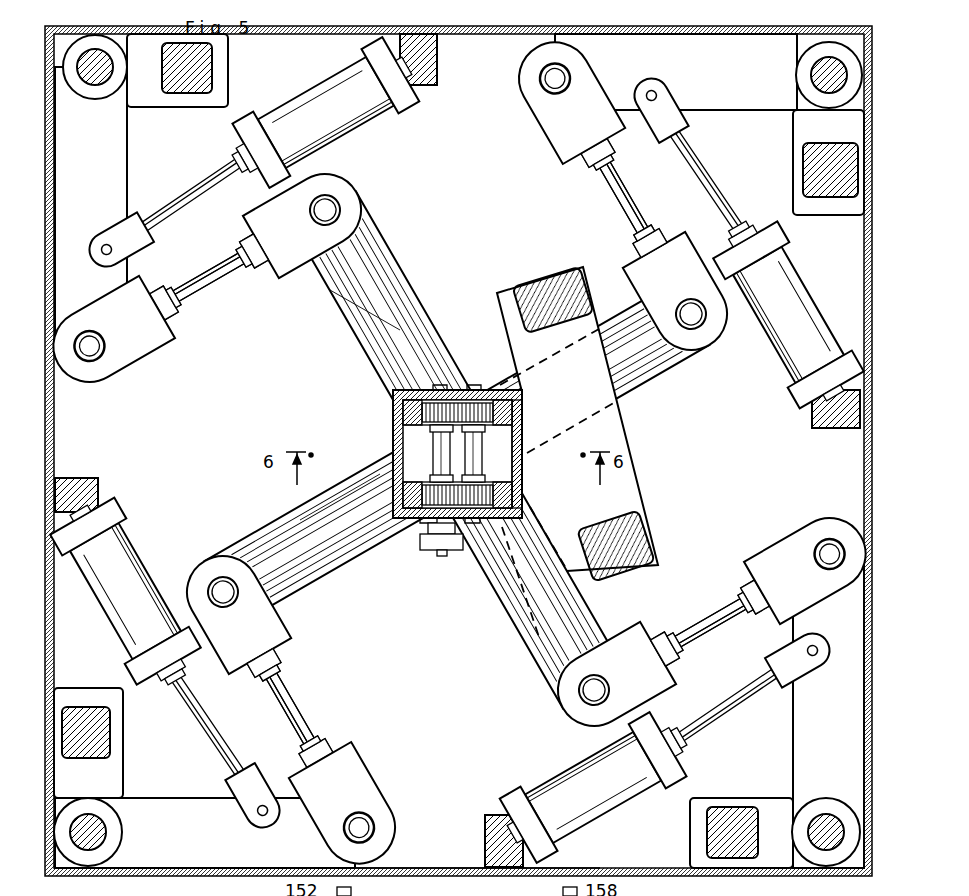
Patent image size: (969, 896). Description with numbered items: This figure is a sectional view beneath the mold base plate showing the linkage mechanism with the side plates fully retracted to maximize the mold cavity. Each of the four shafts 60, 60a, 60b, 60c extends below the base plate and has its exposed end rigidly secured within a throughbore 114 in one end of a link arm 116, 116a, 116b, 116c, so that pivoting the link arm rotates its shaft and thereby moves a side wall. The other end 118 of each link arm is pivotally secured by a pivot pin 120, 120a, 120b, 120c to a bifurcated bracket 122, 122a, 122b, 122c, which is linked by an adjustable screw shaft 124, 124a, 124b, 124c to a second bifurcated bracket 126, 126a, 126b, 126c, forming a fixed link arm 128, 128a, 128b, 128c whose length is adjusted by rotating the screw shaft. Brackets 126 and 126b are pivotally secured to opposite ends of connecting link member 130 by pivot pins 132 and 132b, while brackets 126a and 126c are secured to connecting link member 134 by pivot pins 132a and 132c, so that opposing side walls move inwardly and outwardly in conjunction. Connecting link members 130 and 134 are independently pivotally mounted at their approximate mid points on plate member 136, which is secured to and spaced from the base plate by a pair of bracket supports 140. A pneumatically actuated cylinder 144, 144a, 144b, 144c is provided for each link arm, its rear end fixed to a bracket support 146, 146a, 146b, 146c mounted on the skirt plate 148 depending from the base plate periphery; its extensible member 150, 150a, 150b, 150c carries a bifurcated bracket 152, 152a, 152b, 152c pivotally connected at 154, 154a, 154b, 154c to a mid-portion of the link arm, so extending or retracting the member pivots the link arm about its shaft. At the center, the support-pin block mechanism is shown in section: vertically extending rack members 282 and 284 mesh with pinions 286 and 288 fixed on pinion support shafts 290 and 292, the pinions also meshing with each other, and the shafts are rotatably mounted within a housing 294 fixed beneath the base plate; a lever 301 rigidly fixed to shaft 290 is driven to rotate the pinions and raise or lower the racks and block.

The shaft 60 is at (824, 822).
The shaft 60a is at (822, 64).
The shaft 60b is at (98, 80).
The shaft 60c is at (95, 835).
The throughbore 114 is at (838, 848).
The link arm 116 is at (807, 713).
The link arm 116a is at (750, 90).
The link arm 116b is at (116, 177).
The link arm 116c is at (148, 813).
The other end of link arm 118 is at (848, 598).
The pivot pin 120 is at (827, 542).
The pivot pin 120a is at (570, 70).
The pivot pin 120b is at (89, 357).
The pivot pin 120c is at (350, 828).
The bifurcated bracket 122 is at (773, 560).
The bifurcated bracket 122a is at (555, 115).
The bifurcated bracket 122b is at (113, 316).
The bifurcated bracket 122c is at (350, 793).
The adjustable screw shaft 124 is at (703, 612).
The adjustable screw shaft 124a is at (628, 195).
The adjustable screw shaft 124b is at (185, 286).
The adjustable screw shaft 124c is at (278, 707).
The second bifurcated bracket 126 is at (622, 650).
The bifurcated bracket 126a is at (642, 278).
The bifurcated bracket 126b is at (310, 242).
The bifurcated bracket 126c is at (246, 602).
The fixed link arm 128 is at (715, 598).
The fixed link arm 128a is at (606, 190).
The fixed link arm 128b is at (218, 294).
The fixed link arm 128c is at (325, 724).
The connecting link member 130 is at (398, 298).
The pivot pin 132 is at (584, 680).
The pivot pin 132a is at (680, 323).
The pivot pin 132b is at (337, 200).
The pivot pin 132c is at (209, 580).
The connecting link member 134 is at (657, 368).
The plate member 136 is at (622, 418).
The bracket support 140 is at (542, 288).
The pneumatically actuated cylinder 144 is at (625, 783).
The pneumatically actuated cylinder 144a is at (793, 305).
The pneumatically actuated cylinder 144b is at (318, 104).
The pneumatically actuated cylinder 144c is at (102, 598).
The bracket support 146 is at (497, 813).
The bracket support 146a is at (810, 420).
The bracket support 146b is at (430, 85).
The bracket support 146c is at (80, 480).
The skirt plate 148 is at (437, 868).
The extensible member 150 is at (727, 698).
The extensible member 150a is at (698, 166).
The extensible member 150b is at (178, 207).
The extensible member 150c is at (203, 717).
The bifurcated bracket 152 is at (783, 666).
The bifurcated bracket 152a is at (670, 108).
The bifurcated bracket 152b is at (126, 233).
The bifurcated bracket 152c is at (242, 790).
The pivotal connection 154 is at (816, 658).
The pivotal connection 154a is at (658, 90).
The pivotal connection 154b is at (95, 249).
The pivotal connection 154c is at (250, 817).
The rack member 282 is at (395, 407).
The rack member 284 is at (527, 415).
The pinion 286 is at (373, 328).
The pinion 288 is at (492, 390).
The pinion support shaft 290 is at (430, 440).
The pinion support shaft 292 is at (478, 435).
The housing 294 is at (392, 465).
The lever 301 is at (420, 540).